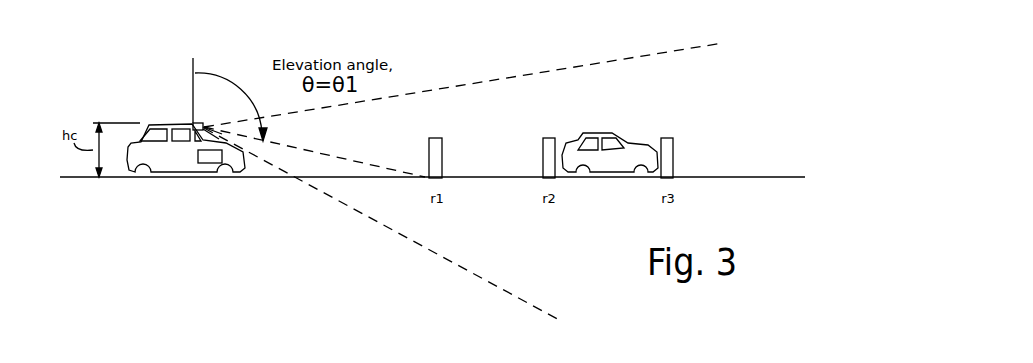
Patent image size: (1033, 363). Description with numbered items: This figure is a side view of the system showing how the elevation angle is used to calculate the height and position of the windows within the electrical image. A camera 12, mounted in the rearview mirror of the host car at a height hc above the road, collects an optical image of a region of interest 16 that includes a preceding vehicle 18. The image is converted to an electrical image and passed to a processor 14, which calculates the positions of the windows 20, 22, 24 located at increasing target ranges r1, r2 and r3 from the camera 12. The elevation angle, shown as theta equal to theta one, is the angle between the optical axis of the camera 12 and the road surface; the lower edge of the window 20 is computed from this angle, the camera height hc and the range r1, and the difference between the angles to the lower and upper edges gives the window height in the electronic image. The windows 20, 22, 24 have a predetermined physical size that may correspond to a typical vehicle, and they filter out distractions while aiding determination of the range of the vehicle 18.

The camera 12 is at (193, 125).
The processor 14 is at (210, 165).
The region of interest 16 is at (387, 227).
The vehicle 18 is at (613, 178).
The window 20 is at (435, 138).
The window 22 is at (548, 138).
The window 24 is at (667, 138).